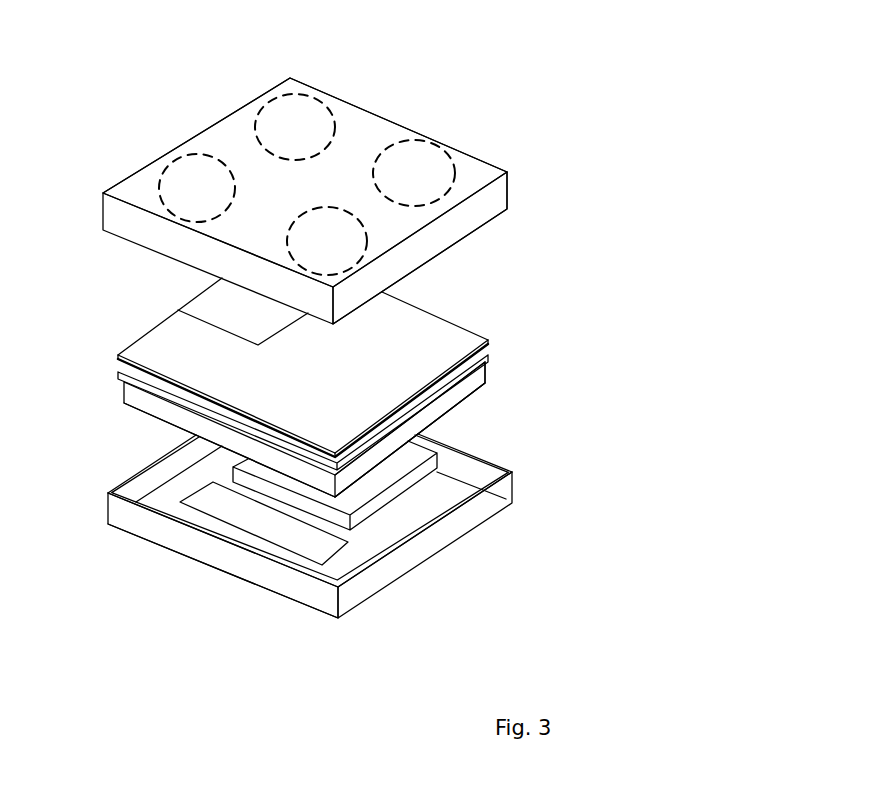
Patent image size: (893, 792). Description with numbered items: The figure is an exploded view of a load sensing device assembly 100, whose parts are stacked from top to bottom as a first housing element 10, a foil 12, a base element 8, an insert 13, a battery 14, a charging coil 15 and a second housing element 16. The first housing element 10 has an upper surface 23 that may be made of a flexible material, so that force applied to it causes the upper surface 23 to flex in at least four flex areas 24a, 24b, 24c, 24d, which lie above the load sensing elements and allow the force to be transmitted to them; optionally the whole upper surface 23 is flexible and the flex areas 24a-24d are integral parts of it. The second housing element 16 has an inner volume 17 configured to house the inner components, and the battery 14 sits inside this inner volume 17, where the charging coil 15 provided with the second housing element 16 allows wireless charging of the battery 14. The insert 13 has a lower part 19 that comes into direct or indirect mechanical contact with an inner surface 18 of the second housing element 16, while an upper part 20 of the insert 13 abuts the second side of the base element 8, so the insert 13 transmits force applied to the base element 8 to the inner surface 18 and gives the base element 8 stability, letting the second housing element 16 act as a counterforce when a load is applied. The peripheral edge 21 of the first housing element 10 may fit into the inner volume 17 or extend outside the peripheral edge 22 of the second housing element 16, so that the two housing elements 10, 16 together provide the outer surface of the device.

The load sensing device assembly 100 is at (554, 80).
The first housing element 10 is at (205, 150).
The upper surface 23 is at (387, 222).
The peripheral edge 21 is at (478, 212).
The flex area 24a is at (305, 118).
The flex area 24b is at (433, 152).
The flex area 24c is at (287, 243).
The flex area 24d is at (168, 195).
The foil 12 is at (168, 338).
The base element 8 is at (490, 363).
The insert 13 is at (128, 388).
The lower part 19 is at (133, 410).
The upper part 20 is at (453, 388).
The battery 14 is at (263, 475).
The second housing element 16 is at (455, 525).
The inner volume 17 is at (177, 473).
The peripheral edge 22 is at (127, 478).
The inner surface 18 is at (402, 525).
The charging coil 15 is at (340, 586).